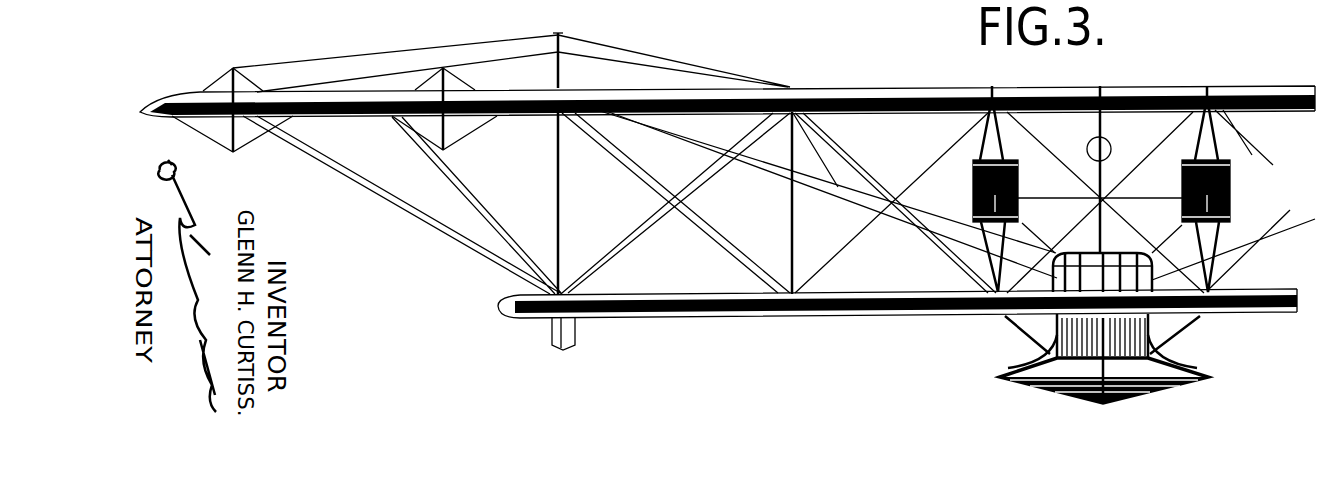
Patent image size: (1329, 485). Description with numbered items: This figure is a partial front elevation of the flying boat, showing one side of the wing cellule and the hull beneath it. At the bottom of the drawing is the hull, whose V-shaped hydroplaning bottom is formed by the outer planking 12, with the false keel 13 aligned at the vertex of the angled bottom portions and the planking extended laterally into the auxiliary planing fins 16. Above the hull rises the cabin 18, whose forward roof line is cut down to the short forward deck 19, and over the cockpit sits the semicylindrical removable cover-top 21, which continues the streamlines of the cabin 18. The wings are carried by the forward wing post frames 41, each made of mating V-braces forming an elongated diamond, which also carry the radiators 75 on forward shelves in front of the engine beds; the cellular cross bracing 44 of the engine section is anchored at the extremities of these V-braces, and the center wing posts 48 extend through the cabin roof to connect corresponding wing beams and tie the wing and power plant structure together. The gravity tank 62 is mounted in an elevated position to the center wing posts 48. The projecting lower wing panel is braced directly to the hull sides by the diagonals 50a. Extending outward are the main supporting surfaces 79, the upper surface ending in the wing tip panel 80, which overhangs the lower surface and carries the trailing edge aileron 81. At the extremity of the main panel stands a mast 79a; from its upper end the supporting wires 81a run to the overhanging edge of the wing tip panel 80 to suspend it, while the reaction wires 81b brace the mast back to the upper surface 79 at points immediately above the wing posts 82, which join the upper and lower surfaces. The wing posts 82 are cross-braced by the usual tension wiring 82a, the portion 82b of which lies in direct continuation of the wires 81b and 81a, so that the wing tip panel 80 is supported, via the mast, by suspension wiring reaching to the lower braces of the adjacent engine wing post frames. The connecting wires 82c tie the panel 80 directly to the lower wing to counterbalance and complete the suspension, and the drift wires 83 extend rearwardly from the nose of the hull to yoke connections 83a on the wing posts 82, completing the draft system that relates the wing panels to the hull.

The outer planking 12 is at (1157, 388).
The false keel 13 is at (1108, 402).
The auxiliary planing fins 16 is at (1040, 369).
The cabin 18 is at (1137, 253).
The forward deck 19 is at (1152, 283).
The removable cover-top 21 is at (1095, 259).
The forward wing post frames 41 is at (999, 141).
The cellular cross bracing 44 is at (1100, 187).
The center wing posts 48 is at (1103, 186).
The diagonals 50a is at (1222, 336).
The gravity tank 62 is at (1112, 145).
The radiators 75 is at (972, 188).
The main supporting surfaces 79 is at (862, 91).
The masts 79a is at (556, 72).
The wing tip panels 80 is at (301, 95).
The trailing edge ailerons 81 is at (427, 118).
The supporting wires 81a is at (415, 70).
The reaction wires 81b is at (669, 76).
The wing posts 82 is at (791, 216).
The tension wiring 82a is at (662, 192).
The tension wiring portion 82b is at (872, 182).
The connecting wires 82c is at (480, 201).
The drift wires 83 is at (946, 238).
The yoke connections 83a is at (775, 168).